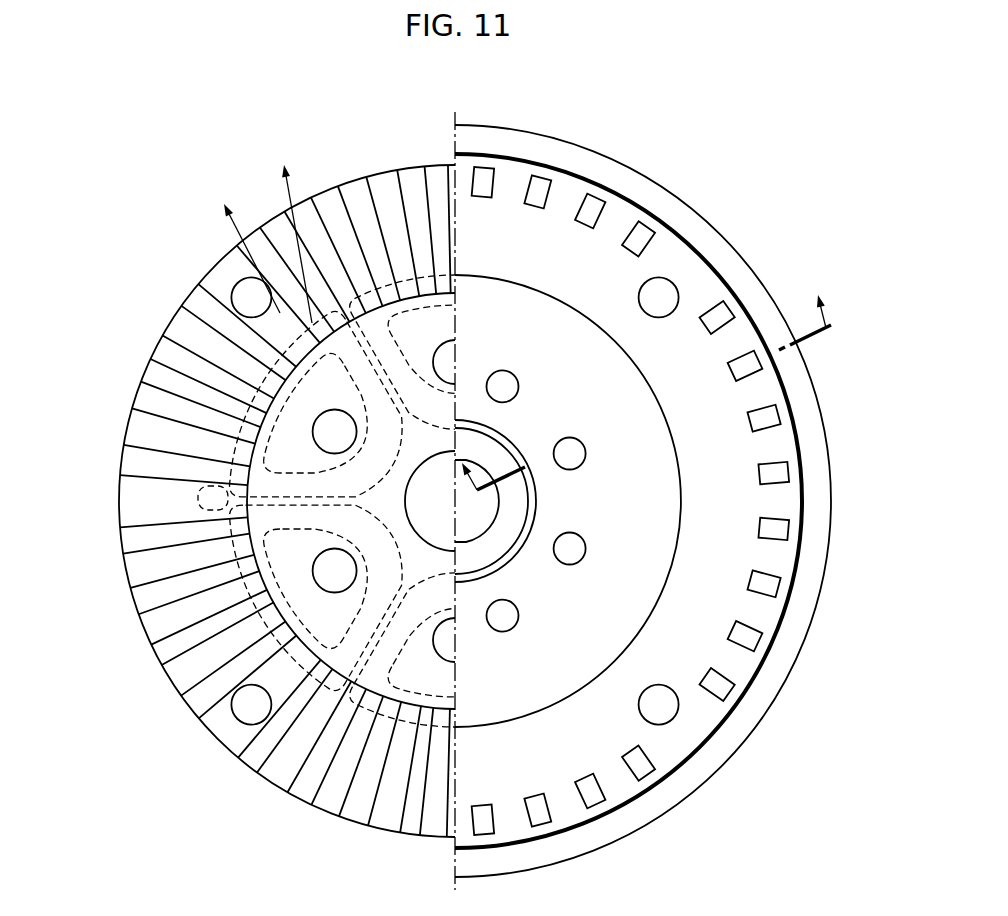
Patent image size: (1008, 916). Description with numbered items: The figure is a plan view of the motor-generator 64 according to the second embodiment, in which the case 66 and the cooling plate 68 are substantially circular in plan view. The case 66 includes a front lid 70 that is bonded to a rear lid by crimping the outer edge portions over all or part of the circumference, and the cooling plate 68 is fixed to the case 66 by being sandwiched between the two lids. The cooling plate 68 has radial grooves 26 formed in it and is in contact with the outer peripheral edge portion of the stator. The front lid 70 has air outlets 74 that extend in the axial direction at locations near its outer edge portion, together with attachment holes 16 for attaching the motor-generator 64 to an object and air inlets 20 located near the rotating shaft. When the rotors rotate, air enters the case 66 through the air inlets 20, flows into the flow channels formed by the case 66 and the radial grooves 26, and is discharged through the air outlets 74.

The attachment holes 16 is at (651, 688).
The air inlets 20 is at (560, 537).
The radial grooves 26 is at (176, 348).
The motor-generator 64 is at (600, 110).
The case 66 is at (628, 160).
The cooling plate 68 is at (116, 498).
The front lid 70 is at (672, 248).
The air outlets 74 is at (767, 472).